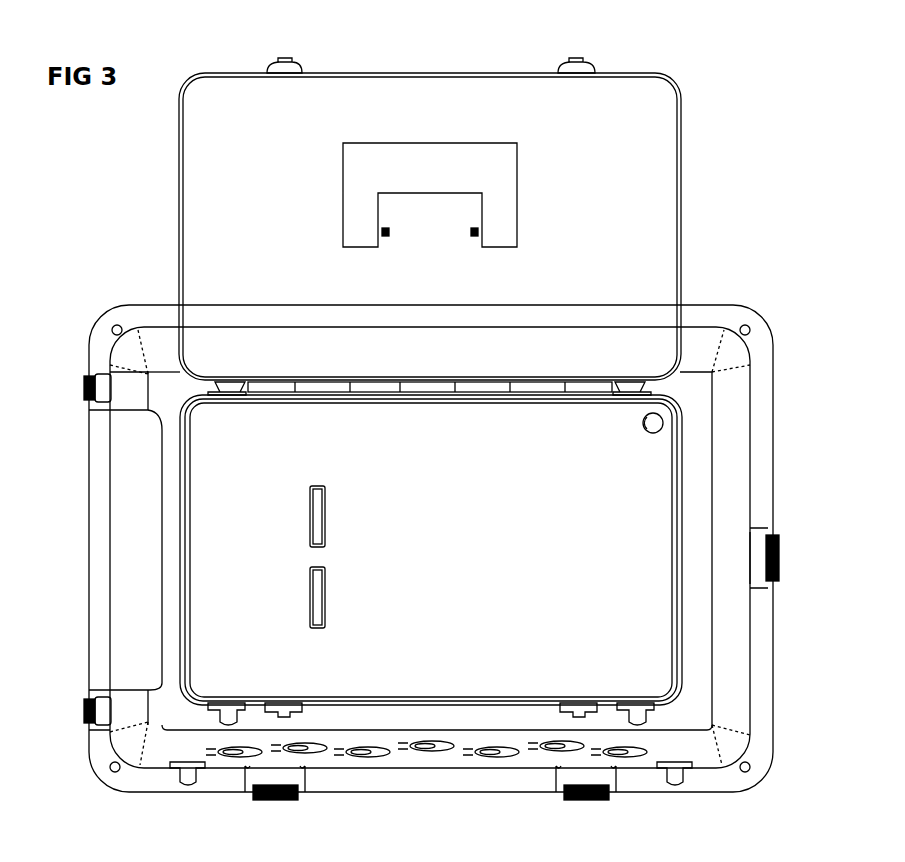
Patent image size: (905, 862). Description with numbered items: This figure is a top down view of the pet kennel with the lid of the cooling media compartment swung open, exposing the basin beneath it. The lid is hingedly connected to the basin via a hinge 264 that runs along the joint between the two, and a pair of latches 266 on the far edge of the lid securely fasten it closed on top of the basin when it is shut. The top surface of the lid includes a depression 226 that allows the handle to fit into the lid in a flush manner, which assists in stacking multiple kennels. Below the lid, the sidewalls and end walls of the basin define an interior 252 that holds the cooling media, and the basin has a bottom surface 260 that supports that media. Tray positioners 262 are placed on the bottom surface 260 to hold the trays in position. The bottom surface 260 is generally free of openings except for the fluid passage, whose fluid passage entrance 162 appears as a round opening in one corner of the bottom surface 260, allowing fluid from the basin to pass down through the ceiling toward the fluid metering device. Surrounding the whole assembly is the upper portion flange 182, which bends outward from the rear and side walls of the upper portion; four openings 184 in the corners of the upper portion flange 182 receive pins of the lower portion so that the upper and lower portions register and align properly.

The fluid passage entrance 162 is at (664, 420).
The upper portion flange 182 is at (718, 780).
The openings 184 is at (119, 323).
The depression 226 is at (343, 209).
The interior 252 is at (427, 608).
The bottom surface 260 is at (522, 665).
The tray positioners 262 is at (305, 600).
The hinge 264 is at (267, 389).
The latches 266 is at (557, 73).